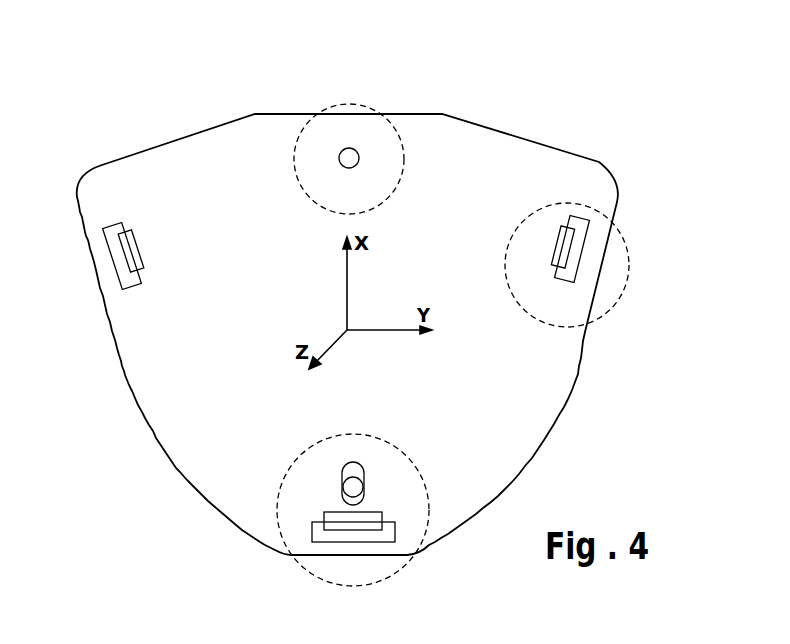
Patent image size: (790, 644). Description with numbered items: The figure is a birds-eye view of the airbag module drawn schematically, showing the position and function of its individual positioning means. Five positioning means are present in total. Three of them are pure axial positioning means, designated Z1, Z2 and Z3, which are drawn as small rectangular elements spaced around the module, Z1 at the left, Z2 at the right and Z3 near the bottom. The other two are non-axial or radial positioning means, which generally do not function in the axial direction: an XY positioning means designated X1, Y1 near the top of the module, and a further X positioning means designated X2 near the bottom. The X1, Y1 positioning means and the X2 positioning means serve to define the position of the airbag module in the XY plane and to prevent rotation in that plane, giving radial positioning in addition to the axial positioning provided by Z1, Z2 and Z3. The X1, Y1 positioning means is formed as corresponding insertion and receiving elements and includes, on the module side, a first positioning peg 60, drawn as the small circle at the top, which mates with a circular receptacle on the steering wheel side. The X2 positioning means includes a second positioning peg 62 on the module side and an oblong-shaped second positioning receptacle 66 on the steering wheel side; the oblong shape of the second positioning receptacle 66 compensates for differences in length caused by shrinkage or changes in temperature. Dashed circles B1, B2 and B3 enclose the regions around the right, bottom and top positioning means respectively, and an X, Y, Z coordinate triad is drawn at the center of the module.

The first positioning peg 60 is at (340, 148).
The second positioning peg 62 is at (351, 487).
The second positioning receptacle 66 is at (345, 478).
The first measurement region B1 is at (610, 268).
The second measurement region B2 is at (342, 567).
The third measurement region B3 is at (363, 122).
The axial positioning means Z1 is at (126, 268).
The axial positioning means Z2 is at (569, 265).
The axial positioning means Z3 is at (367, 529).
The XY positioning means X1 is at (380, 145).
The XY positioning means Y1 is at (380, 173).
The X positioning means X2 is at (381, 485).